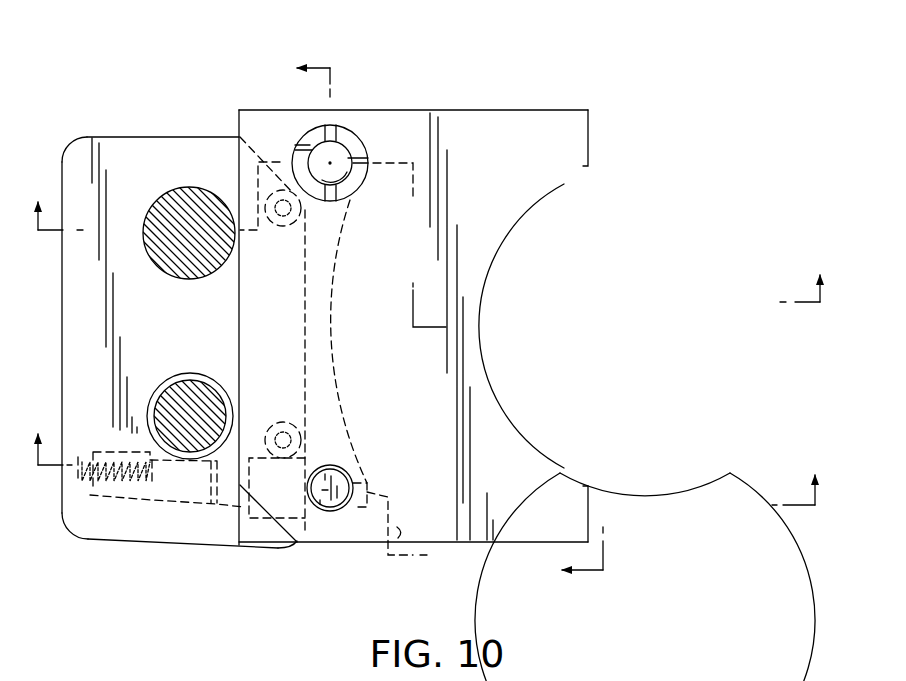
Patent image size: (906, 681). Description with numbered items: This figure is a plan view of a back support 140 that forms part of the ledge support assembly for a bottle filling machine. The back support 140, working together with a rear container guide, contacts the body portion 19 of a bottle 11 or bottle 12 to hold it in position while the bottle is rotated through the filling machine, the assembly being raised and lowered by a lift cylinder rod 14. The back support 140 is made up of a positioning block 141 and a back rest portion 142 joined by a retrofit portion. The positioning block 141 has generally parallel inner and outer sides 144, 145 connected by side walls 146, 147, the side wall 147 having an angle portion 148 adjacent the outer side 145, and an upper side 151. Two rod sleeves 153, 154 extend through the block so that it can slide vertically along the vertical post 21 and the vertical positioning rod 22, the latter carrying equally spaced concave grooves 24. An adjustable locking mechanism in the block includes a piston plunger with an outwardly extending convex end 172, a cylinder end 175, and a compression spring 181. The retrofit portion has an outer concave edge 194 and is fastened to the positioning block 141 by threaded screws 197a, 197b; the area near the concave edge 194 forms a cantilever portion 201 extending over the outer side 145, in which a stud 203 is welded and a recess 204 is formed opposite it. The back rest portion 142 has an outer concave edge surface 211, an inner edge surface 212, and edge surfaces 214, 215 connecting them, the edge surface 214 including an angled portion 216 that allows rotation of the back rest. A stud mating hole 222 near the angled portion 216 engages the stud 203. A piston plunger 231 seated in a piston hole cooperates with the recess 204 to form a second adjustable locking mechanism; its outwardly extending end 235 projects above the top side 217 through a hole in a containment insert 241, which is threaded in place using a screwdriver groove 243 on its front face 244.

The bottle 11 is at (28, 420).
The bottle 12 is at (28, 162).
The lift cylinder rod 14 is at (301, 30).
The body portion 19 is at (652, 494).
The vertical post 21 is at (192, 197).
The vertical positioning rod 22 is at (150, 412).
The concave grooves 24 is at (193, 381).
The back support 140 is at (173, 571).
The positioning block 141 is at (91, 537).
The back rest portion 142 is at (490, 548).
The inner side 144 is at (61, 282).
The outer side 145 is at (308, 380).
The side wall 146 is at (130, 543).
The side wall 147 is at (213, 136).
The angle portion 148 is at (257, 148).
The upper side 151 is at (162, 157).
The rod sleeve 153 is at (157, 385).
The rod sleeve 154 is at (148, 208).
The outwardly extending convex end 172 is at (393, 505).
The cylinder end 175 is at (191, 498).
The compression spring 181 is at (93, 488).
The outer concave edge 194 is at (334, 317).
The threaded screw 197a is at (303, 437).
The threaded screw 197b is at (304, 222).
The cantilever portion 201 is at (343, 448).
The stud 203 is at (328, 508).
The recess 204 is at (378, 134).
The outer concave edge surface 211 is at (551, 188).
The inner edge surface 212 is at (238, 305).
The edge surface 214 is at (448, 543).
The edge surface 215 is at (497, 110).
The angled portion 216 is at (287, 533).
The top side 217 is at (553, 128).
The stud mating hole 222 is at (333, 511).
The piston plunger 231 is at (343, 142).
The outwardly extending end 235 is at (347, 170).
The containment insert 241 is at (359, 131).
The screwdriver groove 243 is at (331, 125).
The front face 244 is at (317, 133).